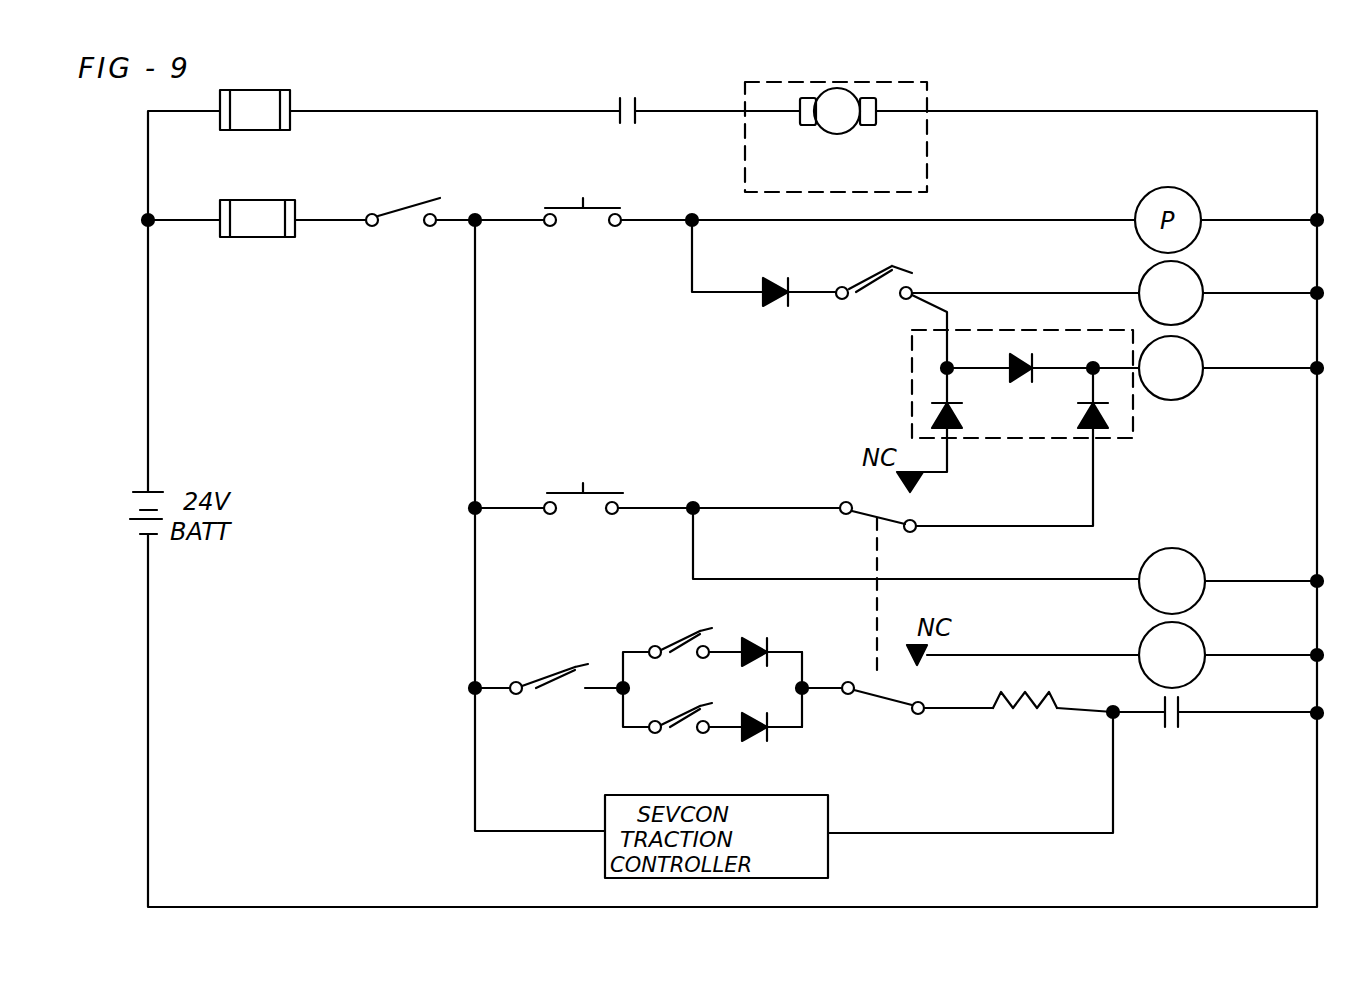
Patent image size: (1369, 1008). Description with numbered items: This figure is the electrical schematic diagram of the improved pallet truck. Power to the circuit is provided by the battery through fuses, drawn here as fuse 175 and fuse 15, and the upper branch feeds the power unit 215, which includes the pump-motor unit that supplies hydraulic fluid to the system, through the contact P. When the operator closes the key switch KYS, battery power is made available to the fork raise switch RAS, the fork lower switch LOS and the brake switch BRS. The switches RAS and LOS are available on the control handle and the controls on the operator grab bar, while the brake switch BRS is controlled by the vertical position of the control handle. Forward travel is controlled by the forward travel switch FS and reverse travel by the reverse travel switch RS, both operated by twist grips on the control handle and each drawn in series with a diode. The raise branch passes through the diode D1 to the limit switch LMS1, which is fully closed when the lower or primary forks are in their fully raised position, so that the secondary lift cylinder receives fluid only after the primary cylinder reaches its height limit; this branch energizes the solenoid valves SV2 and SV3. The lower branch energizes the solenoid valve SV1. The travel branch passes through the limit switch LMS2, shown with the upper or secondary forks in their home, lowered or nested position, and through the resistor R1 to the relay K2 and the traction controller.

The power unit 215 is at (927, 97).
The 175 amp fuse 175 is at (255, 110).
The 15 amp fuse 15 is at (257, 218).
The pump contactor contact P is at (626, 128).
The key switch KYS is at (403, 228).
The fork raise switch RAS is at (582, 228).
The diode D1 is at (770, 308).
The limit switch LMS1 is at (869, 297).
The solenoid valve SV2 is at (1171, 293).
The solenoid valve SV3 is at (1171, 368).
The fork lower switch LOS is at (583, 515).
The solenoid valve SV1 is at (1172, 581).
The relay K2 is at (1172, 693).
The brake switch BRS is at (549, 700).
The forward travel switch FS is at (680, 659).
The reverse travel switch RS is at (680, 734).
The limit switch LMS2 is at (883, 716).
The resistor R1 is at (1025, 720).